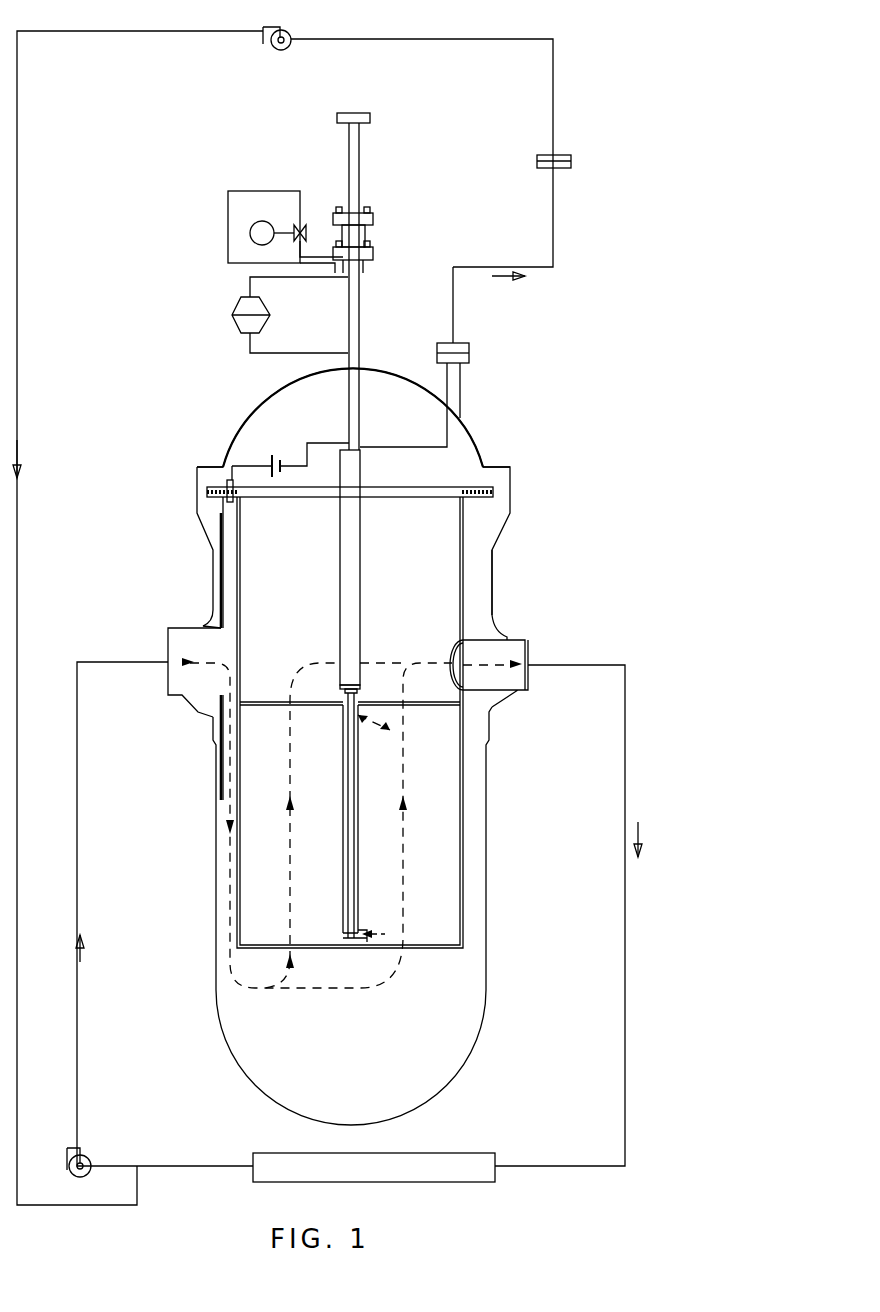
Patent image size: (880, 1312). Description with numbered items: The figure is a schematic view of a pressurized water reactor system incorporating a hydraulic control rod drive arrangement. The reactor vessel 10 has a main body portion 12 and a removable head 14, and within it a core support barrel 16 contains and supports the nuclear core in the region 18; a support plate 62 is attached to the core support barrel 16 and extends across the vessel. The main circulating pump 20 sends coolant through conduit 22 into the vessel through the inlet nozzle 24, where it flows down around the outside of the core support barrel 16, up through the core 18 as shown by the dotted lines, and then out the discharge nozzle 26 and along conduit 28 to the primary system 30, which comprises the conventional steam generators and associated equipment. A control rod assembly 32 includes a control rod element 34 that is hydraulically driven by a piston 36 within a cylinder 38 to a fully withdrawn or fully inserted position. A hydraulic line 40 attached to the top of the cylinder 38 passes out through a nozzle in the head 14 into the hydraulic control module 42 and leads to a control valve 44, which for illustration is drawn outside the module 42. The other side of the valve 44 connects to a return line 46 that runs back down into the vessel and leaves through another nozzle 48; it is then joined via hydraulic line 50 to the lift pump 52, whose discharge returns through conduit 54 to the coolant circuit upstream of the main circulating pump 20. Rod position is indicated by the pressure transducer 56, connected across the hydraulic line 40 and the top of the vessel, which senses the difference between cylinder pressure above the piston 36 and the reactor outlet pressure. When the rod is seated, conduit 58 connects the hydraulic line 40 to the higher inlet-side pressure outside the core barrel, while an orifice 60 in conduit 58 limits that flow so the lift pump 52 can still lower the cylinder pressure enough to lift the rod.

The reactor vessel 10 is at (517, 598).
The main body portion 12 is at (483, 565).
The removable head 14 is at (466, 464).
The core support barrel 16 is at (241, 590).
The reactor core 18 is at (262, 903).
The main circulating pump 20 is at (86, 1155).
The conduit 22 is at (78, 832).
The inlet nozzle 24 is at (201, 622).
The discharge nozzle 26 is at (508, 634).
The conduit 28 is at (625, 738).
The primary system 30 is at (441, 1153).
The control rod assembly 32 is at (362, 806).
The control rod element 34 is at (355, 884).
The piston 36 is at (353, 686).
The cylinder 38 is at (356, 612).
The hydraulic line 40 is at (228, 238).
The hydraulic control module 42 is at (375, 221).
The control valve 44 is at (303, 218).
The return line 46 is at (314, 257).
The nozzle 48 is at (463, 383).
The hydraulic line 50 is at (455, 326).
The lift pump 52 is at (293, 30).
The conduit 54 is at (20, 395).
The pressure transducer 56 is at (245, 322).
The conduit 58 is at (305, 455).
The orifice 60 is at (268, 463).
The support plate 62 is at (430, 498).